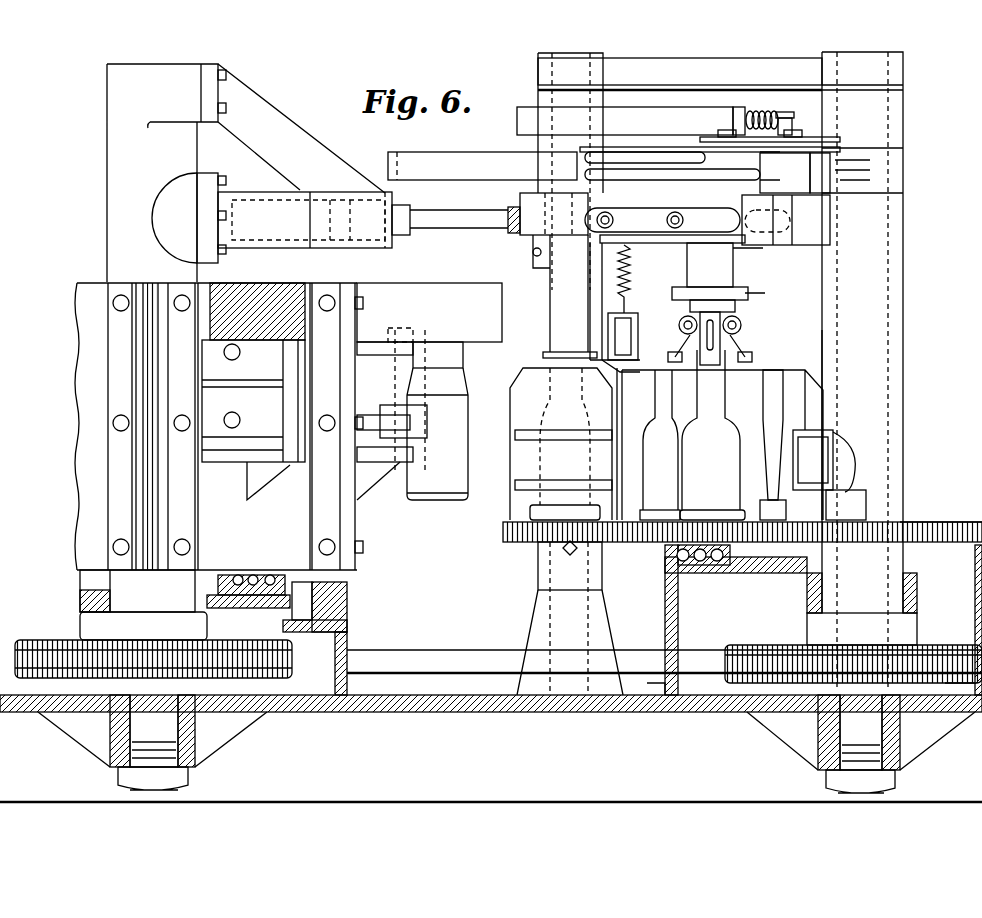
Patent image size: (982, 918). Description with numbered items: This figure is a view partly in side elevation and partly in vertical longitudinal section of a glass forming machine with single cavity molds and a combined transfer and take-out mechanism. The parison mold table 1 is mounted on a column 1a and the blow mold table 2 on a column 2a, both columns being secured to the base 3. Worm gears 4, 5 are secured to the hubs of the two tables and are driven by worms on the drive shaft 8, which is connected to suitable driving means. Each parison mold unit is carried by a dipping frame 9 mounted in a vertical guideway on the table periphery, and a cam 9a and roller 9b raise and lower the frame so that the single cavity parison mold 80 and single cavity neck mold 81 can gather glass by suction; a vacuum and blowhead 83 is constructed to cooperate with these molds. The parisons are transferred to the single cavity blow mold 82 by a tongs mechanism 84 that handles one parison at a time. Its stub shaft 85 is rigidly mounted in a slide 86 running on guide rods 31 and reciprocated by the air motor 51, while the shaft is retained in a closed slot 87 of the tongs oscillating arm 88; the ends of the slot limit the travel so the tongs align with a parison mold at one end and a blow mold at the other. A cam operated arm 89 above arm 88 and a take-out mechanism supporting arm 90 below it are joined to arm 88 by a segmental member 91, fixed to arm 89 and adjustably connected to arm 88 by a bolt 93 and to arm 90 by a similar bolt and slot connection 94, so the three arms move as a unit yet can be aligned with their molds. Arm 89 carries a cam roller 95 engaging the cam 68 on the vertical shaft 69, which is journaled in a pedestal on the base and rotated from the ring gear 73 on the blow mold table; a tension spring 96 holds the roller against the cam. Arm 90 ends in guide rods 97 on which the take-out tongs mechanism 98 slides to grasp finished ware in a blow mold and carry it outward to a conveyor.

The parison mold table 1 is at (348, 596).
The column 1a is at (140, 727).
The blow mold table 2 is at (932, 522).
The column 2a is at (845, 314).
The base 3 is at (532, 712).
The worm gear 4 is at (290, 664).
The worm gear 5 is at (728, 660).
The drive shaft 8 is at (470, 658).
The dipping frame 9 is at (300, 528).
The cam 9a is at (348, 624).
The roller 9b is at (340, 572).
The guide rods 31 is at (447, 210).
The air motor 51 is at (330, 240).
The cam 68 is at (517, 120).
The vertical shaft 69 is at (553, 276).
The ring gear 73 is at (505, 537).
The single cavity parison mold 80 is at (445, 495).
The single cavity neck mold 81 is at (462, 358).
The single cavity blow mold 82 is at (513, 392).
The vacuum and blowhead 83 is at (415, 295).
The tongs mechanism 84 is at (652, 300).
The stub shaft 85 is at (522, 203).
The slide 86 is at (518, 232).
The closed slot 87 is at (440, 158).
The tongs oscillating arm 88 is at (640, 170).
The cam operated arm 89 is at (772, 152).
The take-out mechanism supporting arm 90 is at (832, 232).
The segmental member 91 is at (818, 151).
The bolt 93 is at (700, 140).
The bolt and slot connection 94 is at (795, 128).
The cam roller 95 is at (738, 107).
The tension spring 96 is at (758, 110).
The guide rods 97 is at (665, 225).
The take-out tongs mechanism 98 is at (765, 245).